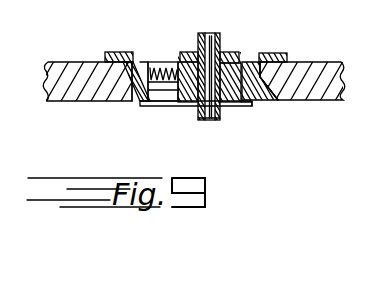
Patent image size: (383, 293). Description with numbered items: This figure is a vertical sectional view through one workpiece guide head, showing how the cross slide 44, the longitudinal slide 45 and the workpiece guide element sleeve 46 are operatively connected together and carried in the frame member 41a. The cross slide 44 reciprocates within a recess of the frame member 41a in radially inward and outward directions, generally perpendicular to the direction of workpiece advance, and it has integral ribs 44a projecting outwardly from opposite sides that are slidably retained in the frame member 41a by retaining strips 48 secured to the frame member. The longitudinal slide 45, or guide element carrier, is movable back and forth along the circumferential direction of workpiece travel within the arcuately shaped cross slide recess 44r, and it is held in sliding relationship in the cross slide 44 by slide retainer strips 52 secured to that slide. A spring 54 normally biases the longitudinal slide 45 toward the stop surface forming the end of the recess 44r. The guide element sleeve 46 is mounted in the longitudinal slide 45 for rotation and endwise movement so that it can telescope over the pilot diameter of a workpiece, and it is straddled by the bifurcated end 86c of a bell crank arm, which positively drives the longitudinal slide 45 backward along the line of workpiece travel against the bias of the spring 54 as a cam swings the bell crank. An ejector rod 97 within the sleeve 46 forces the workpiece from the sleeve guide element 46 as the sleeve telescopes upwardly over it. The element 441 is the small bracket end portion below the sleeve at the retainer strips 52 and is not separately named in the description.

The frame member 41a is at (84, 101).
The retaining strips 48 is at (106, 52).
The cross slide recess 44r is at (155, 62).
The integral ribs 44a is at (124, 67).
The cross slide 44 is at (277, 101).
The spring 54 is at (157, 69).
The slide retainer strips 52 is at (192, 93).
The bracket end 441 is at (243, 104).
The bifurcated end 86c is at (229, 52).
The longitudinal slide 45 is at (244, 62).
The workpiece guide element sleeve 46 is at (196, 33).
The ejector rod 97 is at (206, 121).